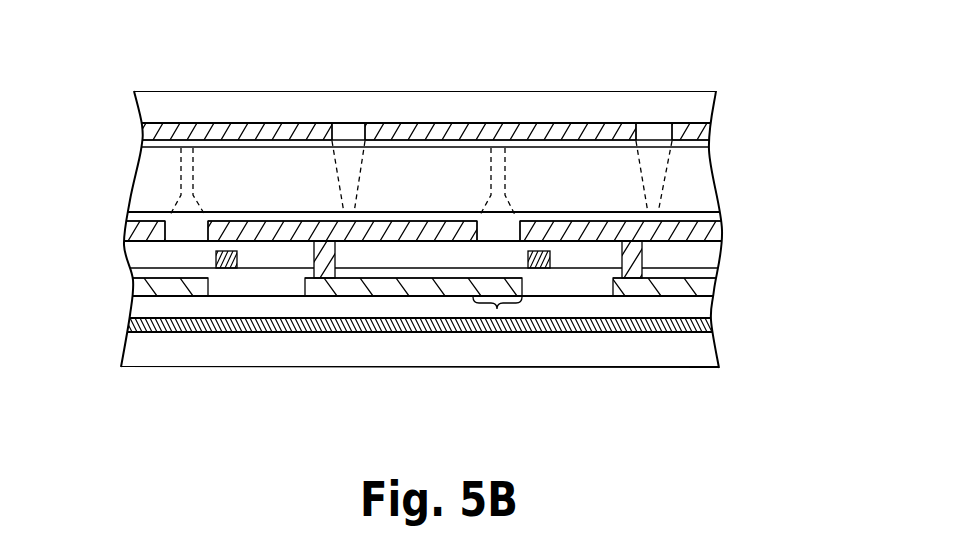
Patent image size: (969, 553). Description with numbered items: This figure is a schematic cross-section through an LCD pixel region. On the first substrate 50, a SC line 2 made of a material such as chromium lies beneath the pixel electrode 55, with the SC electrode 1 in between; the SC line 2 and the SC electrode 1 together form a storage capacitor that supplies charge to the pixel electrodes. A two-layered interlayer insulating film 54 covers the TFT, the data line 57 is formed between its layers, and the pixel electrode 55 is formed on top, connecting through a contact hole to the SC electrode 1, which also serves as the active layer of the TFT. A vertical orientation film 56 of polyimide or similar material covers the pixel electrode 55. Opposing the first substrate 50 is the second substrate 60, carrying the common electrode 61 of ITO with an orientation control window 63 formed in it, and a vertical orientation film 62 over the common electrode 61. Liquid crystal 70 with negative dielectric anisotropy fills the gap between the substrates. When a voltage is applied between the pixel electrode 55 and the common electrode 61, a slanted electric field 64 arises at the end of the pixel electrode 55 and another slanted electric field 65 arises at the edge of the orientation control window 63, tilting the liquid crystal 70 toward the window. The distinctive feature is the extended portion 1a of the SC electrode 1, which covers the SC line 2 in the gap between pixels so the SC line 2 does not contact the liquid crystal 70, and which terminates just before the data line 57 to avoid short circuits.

The second substrate 60 is at (707, 110).
The common electrode 61 is at (708, 132).
The vertical orientation film 62 is at (708, 147).
The liquid crystal 70 is at (708, 190).
The vertical orientation film 56 is at (715, 216).
The pixel electrode 55 is at (713, 237).
The interlayer insulating film 54 is at (708, 273).
The SC electrode 1 is at (708, 292).
The extended portion 1a is at (497, 309).
The SC line 2 is at (708, 325).
The first substrate 50 is at (708, 358).
The data line 57 is at (237, 257).
The orientation control window 63 is at (350, 134).
The electric field 64 is at (195, 178).
The electric field 65 is at (362, 182).